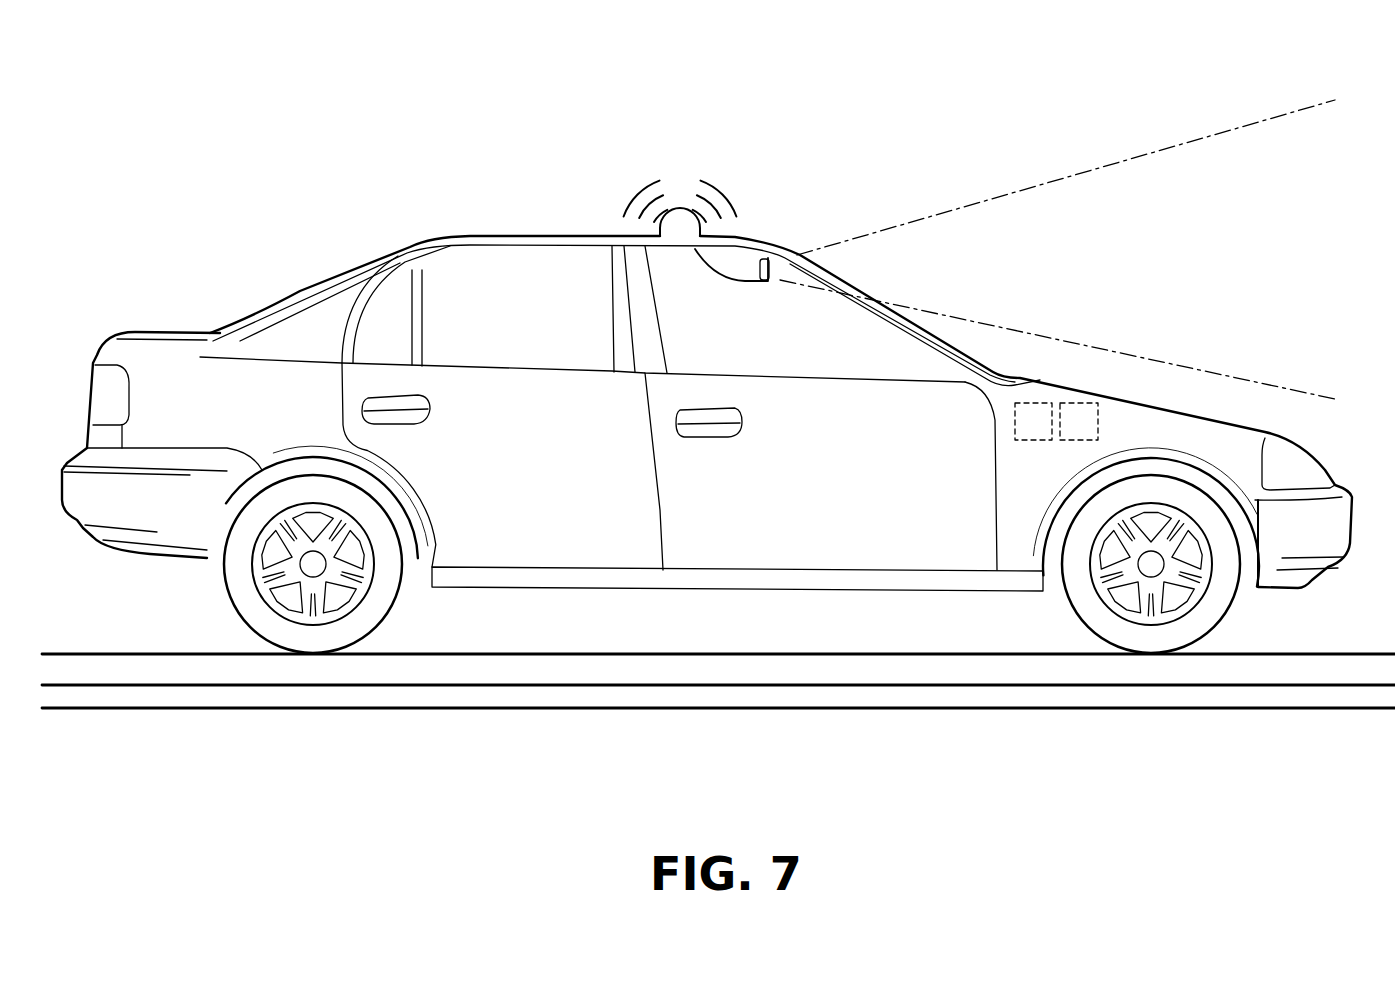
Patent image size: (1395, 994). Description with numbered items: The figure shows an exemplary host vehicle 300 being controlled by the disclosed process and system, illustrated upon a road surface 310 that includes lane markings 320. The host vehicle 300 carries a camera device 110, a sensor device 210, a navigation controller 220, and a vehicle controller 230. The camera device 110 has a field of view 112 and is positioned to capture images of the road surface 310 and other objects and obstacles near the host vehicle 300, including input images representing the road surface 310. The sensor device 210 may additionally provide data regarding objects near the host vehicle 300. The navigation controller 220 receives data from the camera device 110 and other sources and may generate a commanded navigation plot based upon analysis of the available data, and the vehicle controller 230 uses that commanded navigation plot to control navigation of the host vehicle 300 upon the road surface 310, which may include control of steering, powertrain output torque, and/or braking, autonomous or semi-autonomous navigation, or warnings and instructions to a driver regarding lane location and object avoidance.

The camera device 110 is at (755, 262).
The field of view 112 is at (1100, 164).
The sensor device 210 is at (682, 214).
The navigation controller 220 is at (1035, 403).
The vehicle controller 230 is at (1085, 403).
The host vehicle 300 is at (450, 236).
The road surface 310 is at (778, 624).
The lane markings 320 is at (960, 700).